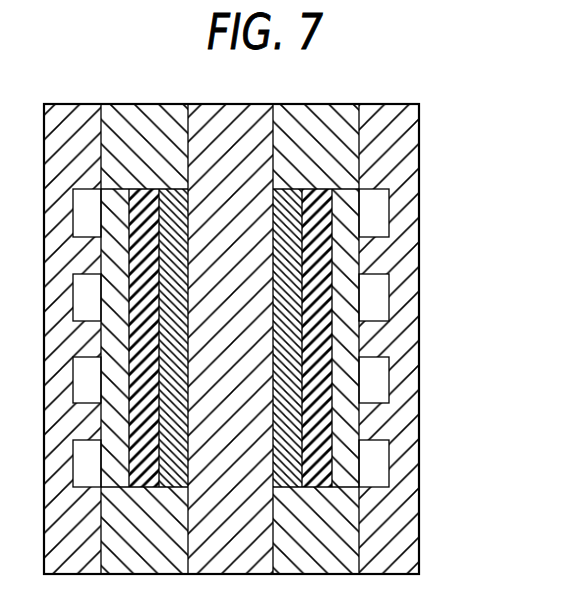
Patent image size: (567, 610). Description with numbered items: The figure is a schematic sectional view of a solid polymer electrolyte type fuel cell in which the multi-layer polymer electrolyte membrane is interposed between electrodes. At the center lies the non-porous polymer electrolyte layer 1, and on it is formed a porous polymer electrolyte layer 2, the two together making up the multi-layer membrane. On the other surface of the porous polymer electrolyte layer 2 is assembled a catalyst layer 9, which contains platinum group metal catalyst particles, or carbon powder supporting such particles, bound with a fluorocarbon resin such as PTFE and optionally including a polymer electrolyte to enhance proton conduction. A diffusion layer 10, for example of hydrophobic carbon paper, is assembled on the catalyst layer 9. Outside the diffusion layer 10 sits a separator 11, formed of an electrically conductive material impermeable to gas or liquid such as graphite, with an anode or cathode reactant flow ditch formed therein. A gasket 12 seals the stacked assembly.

The non-porous polymer electrolyte layer 1 is at (260, 155).
The porous polymer electrolyte layer 2 is at (296, 237).
The catalyst layer 9 is at (325, 294).
The diffusion layer 10 is at (353, 346).
The separator 11 is at (421, 435).
The gasket 12 is at (351, 121).